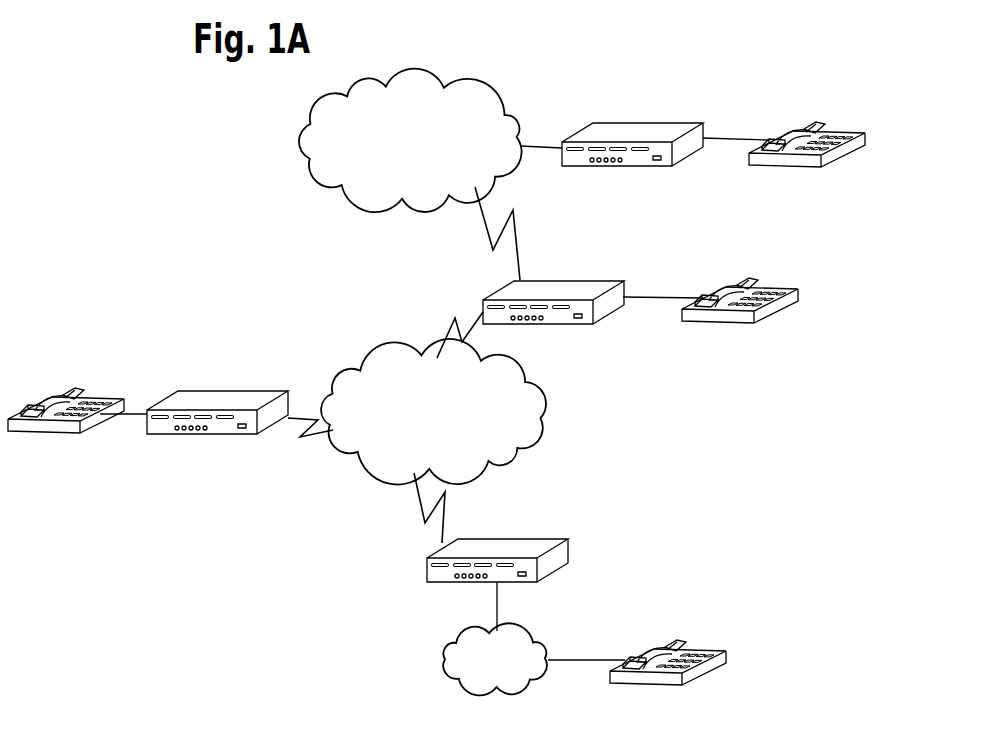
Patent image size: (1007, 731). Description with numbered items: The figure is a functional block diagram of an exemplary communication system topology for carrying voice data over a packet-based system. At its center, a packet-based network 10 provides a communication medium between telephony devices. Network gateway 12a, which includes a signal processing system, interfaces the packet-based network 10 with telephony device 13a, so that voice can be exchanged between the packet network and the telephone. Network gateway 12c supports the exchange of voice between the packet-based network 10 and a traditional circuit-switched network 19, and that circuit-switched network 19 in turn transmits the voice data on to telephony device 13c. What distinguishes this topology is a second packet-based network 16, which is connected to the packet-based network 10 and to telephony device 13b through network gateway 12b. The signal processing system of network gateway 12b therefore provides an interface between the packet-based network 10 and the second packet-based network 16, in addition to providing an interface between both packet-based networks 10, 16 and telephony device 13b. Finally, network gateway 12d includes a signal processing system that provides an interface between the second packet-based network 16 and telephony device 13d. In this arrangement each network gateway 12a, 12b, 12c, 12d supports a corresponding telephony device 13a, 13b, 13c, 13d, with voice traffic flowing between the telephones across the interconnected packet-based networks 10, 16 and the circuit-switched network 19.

The packet-based network 10 is at (362, 371).
The second packet-based network 16 is at (345, 98).
The traditional circuit-switched network 19 is at (464, 641).
The network gateway 12a is at (205, 391).
The network gateway 12b is at (555, 280).
The network gateway 12c is at (515, 542).
The network gateway 12d is at (617, 123).
The telephony device 13a is at (107, 394).
The telephony device 13b is at (780, 287).
The telephony device 13c is at (700, 648).
The telephony device 13d is at (852, 128).